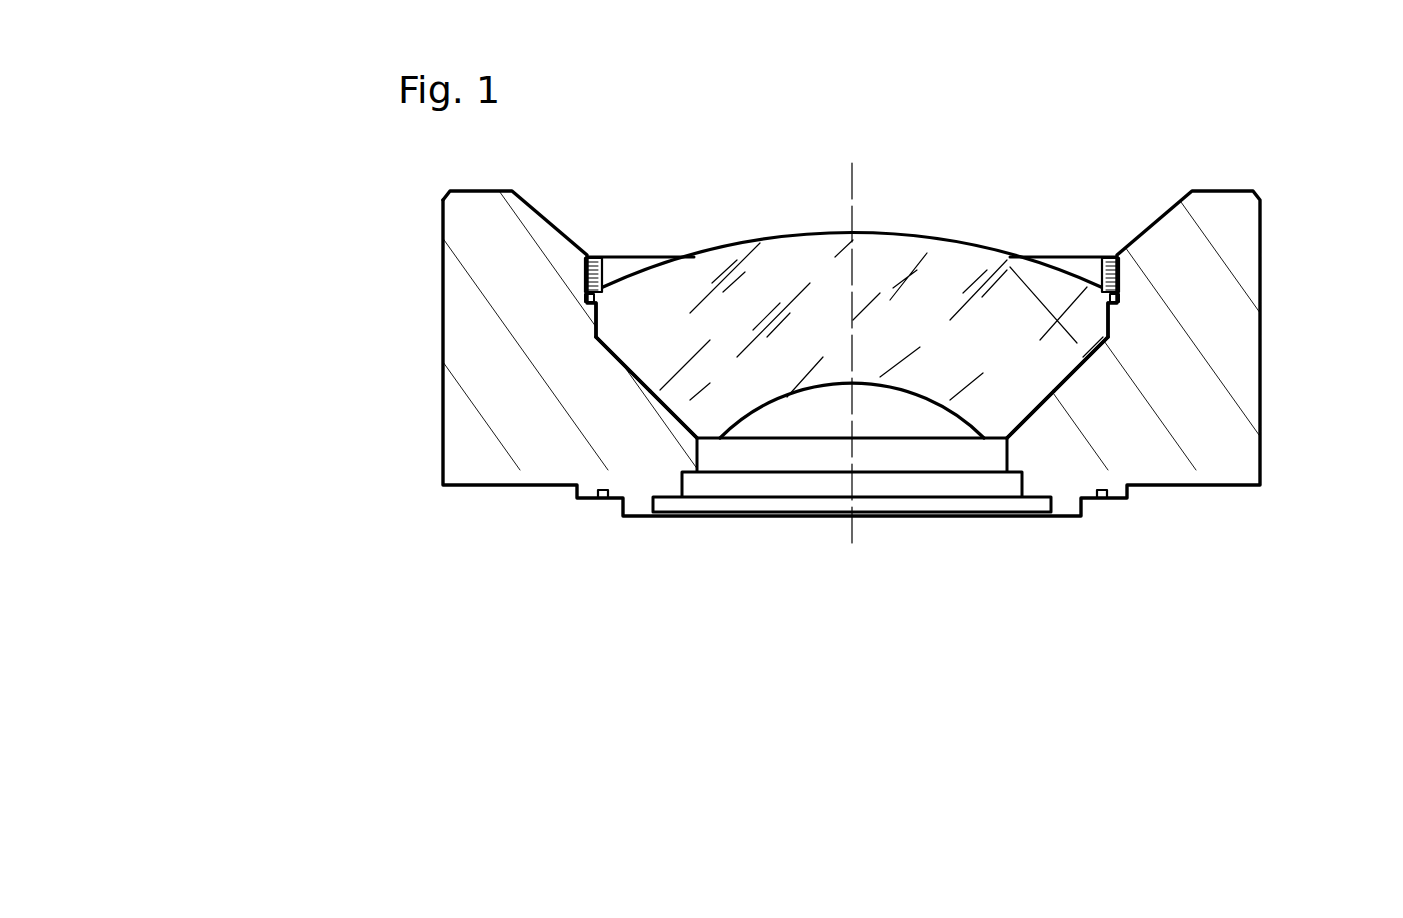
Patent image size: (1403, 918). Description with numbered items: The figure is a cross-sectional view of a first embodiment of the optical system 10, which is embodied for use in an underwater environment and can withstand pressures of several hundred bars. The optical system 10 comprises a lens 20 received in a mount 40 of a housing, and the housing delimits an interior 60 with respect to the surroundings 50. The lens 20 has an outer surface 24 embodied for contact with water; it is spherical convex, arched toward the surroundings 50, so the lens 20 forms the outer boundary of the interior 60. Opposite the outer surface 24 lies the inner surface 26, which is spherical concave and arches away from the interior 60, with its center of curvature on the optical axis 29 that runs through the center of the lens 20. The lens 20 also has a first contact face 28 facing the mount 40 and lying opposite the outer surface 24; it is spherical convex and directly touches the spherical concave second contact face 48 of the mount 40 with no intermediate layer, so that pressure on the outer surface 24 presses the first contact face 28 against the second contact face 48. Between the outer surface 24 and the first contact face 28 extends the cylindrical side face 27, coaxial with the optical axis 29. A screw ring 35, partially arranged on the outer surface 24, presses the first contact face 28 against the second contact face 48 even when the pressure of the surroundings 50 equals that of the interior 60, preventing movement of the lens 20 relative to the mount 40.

The optical system 10 is at (330, 222).
The lens 20 is at (800, 375).
The outer surface 24 is at (972, 236).
The inner surface 26 is at (803, 389).
The side face 27 is at (592, 316).
The first contact face 28 is at (661, 411).
The optical axis 29 is at (851, 175).
The screw ring 35 is at (852, 194).
The mount 40 is at (1242, 343).
The second contact face 48 is at (638, 388).
The surroundings 50 is at (1232, 137).
The interior 60 is at (958, 611).